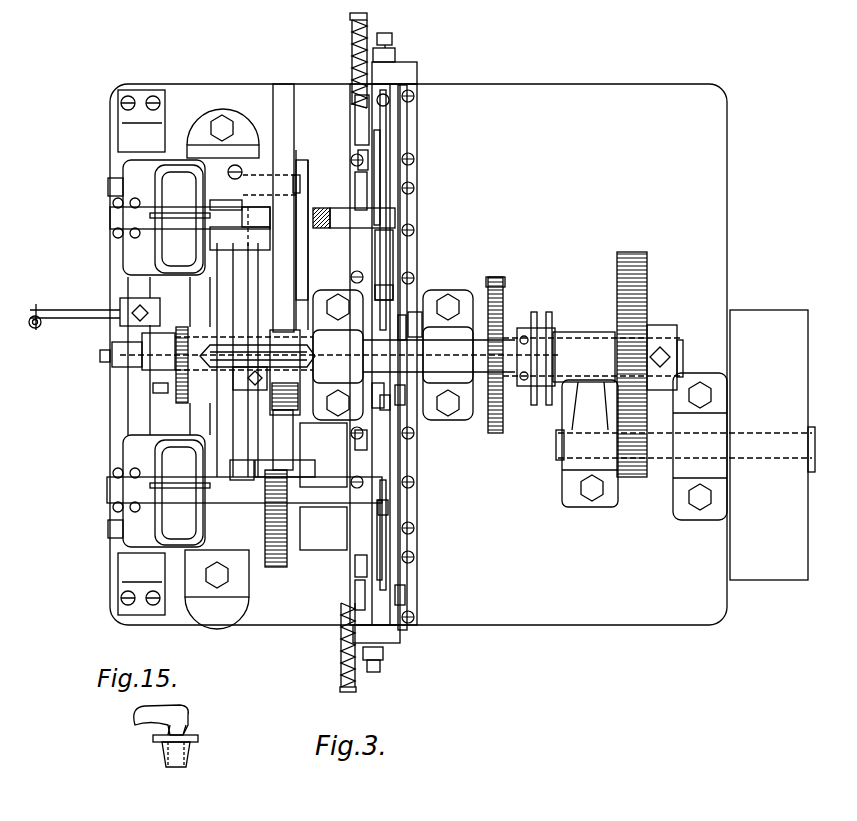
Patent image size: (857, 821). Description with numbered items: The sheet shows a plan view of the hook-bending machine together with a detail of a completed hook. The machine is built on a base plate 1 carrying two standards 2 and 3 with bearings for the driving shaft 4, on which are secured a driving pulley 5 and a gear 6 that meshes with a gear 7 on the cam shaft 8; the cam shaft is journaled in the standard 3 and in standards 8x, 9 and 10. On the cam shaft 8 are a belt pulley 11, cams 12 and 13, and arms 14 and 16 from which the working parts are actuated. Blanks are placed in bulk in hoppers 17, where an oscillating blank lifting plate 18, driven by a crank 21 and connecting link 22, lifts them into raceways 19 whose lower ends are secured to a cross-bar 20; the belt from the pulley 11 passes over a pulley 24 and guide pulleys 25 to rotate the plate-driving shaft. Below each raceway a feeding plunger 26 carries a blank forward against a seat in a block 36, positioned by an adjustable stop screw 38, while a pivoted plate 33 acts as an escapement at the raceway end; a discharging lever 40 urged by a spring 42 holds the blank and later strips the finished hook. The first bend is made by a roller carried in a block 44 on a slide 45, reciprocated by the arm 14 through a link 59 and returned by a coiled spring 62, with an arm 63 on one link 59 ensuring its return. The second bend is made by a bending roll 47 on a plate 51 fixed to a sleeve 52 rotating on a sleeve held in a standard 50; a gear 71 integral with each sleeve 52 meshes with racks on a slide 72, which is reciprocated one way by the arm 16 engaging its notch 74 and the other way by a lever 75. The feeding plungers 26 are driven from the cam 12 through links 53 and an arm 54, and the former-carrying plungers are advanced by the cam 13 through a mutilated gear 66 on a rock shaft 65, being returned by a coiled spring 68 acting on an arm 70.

The base plate 1 is at (548, 620).
The standard 2 is at (682, 472).
The standard 3 is at (578, 340).
The driving shaft 4 is at (558, 447).
The driving pulley 5 is at (748, 318).
The gear 6 is at (633, 470).
The gear 7 is at (643, 270).
The cam shaft 8 is at (682, 360).
The standard 8x is at (498, 278).
The standard 9 is at (325, 330).
The standard 10 is at (140, 405).
The belt pulley 11 is at (553, 318).
The cam 12 is at (504, 282).
The cam 13 is at (182, 327).
The arm 14 is at (418, 318).
The arm 16 is at (267, 390).
The hopper 17 is at (137, 172).
The blank lifting plate 18 is at (179, 355).
The raceway 19 is at (325, 208).
The cross-bar 20 is at (365, 447).
The crank 21 is at (248, 207).
The connecting link 22 is at (222, 200).
The pulley 24 is at (220, 345).
The guide pulleys 25 is at (520, 327).
The feeding plunger 26 is at (395, 255).
The plate 33 is at (388, 508).
The block 36 is at (366, 123).
The adjustable stop screw 38 is at (388, 80).
The discharging device 40 is at (382, 185).
The spring 42 is at (388, 143).
The block 44 is at (357, 590).
The slide 45 is at (405, 325).
The bending roll 47 is at (355, 545).
The standard 50 is at (198, 150).
The plate 51 is at (358, 182).
The sleeve 52 is at (360, 160).
The links 53 is at (390, 410).
The arm 54 is at (377, 393).
The link 59 is at (407, 212).
The coiled spring 62 is at (352, 54).
The arm 63 is at (400, 402).
The rock shaft 65 is at (137, 405).
The mutilated gear 66 is at (120, 360).
The coiled spring 68 is at (35, 327).
The arm 70 is at (75, 308).
The gear 71 is at (277, 545).
The slide 72 is at (283, 84).
The notch 74 is at (280, 295).
The lever 75 is at (360, 445).